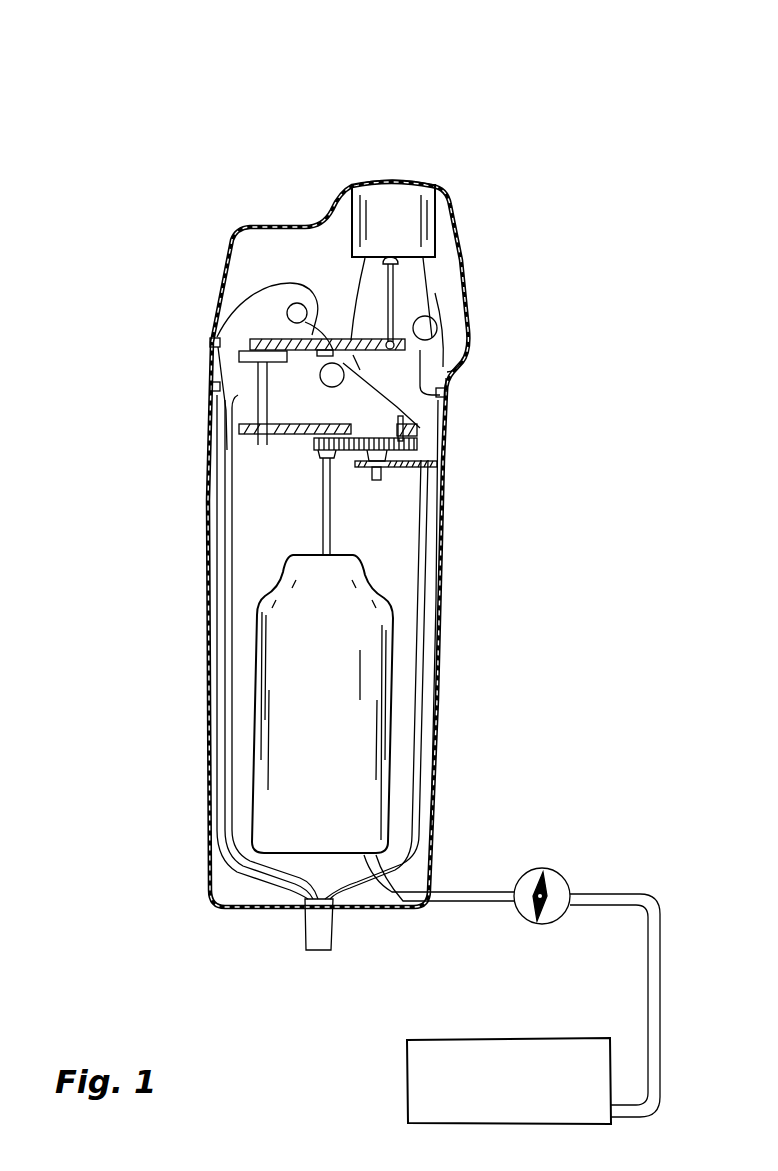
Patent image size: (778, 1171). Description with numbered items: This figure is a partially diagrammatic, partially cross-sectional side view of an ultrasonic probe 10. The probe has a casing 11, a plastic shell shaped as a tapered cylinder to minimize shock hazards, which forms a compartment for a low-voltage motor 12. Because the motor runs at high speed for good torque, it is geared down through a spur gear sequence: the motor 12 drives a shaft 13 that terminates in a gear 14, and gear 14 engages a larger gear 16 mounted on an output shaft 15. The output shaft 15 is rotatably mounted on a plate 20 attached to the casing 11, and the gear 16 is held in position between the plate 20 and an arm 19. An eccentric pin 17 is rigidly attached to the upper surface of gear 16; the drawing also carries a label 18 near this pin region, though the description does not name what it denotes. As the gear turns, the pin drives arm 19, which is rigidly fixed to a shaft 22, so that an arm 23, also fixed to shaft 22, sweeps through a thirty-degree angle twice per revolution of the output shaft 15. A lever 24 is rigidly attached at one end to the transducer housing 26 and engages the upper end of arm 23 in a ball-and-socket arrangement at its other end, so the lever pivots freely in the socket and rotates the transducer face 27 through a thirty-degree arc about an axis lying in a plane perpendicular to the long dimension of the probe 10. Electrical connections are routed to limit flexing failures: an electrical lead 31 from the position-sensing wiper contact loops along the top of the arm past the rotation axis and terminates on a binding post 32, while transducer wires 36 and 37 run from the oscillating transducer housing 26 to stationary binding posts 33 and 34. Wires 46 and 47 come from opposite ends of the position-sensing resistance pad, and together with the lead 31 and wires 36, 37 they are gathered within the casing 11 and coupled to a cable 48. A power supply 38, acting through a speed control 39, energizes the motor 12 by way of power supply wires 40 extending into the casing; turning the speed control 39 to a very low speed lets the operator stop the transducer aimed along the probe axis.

The ultrasonic probe 10 is at (168, 78).
The casing 11 is at (209, 722).
The motor 12 is at (383, 631).
The shaft 13 is at (330, 515).
The gear 14 is at (317, 444).
The output shaft 15 is at (437, 466).
The gear 16 is at (418, 445).
The eccentric pin 17 is at (447, 413).
The pin 18 is at (394, 426).
The arm 19 is at (283, 435).
The plate 20 is at (384, 474).
The shaft 22 is at (258, 410).
The arm 23 is at (328, 350).
The lever 24 is at (395, 293).
The transducer housing 26 is at (437, 222).
The transducer face 27 is at (400, 177).
The electrical lead 31 is at (258, 285).
The binding post 32 is at (213, 335).
The binding post 33 is at (446, 388).
The binding post 34 is at (208, 378).
The transducer wire 36 is at (440, 342).
The transducer wire 37 is at (357, 280).
The power supply 38 is at (550, 1038).
The speed control 39 is at (561, 876).
The power supply wires 40 is at (465, 892).
The wire 46 is at (226, 582).
The wire 47 is at (447, 371).
The cable 48 is at (303, 933).